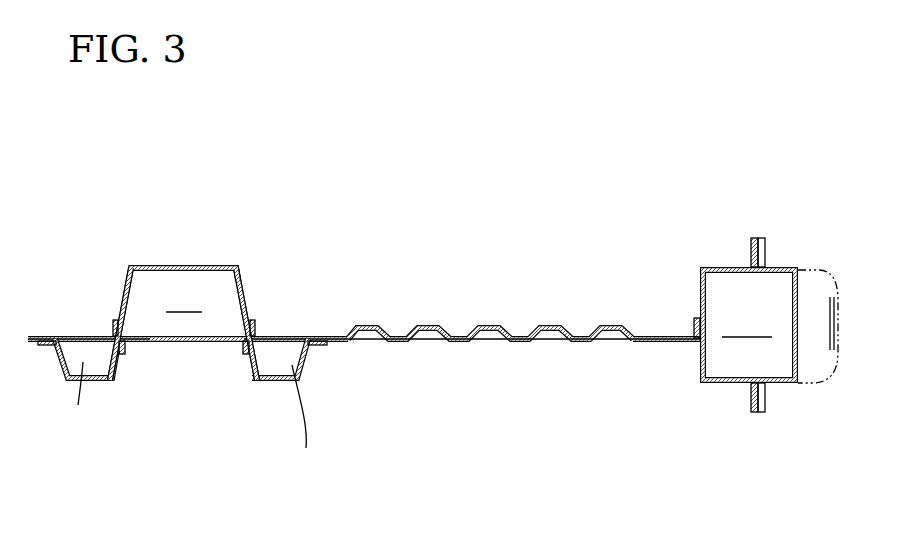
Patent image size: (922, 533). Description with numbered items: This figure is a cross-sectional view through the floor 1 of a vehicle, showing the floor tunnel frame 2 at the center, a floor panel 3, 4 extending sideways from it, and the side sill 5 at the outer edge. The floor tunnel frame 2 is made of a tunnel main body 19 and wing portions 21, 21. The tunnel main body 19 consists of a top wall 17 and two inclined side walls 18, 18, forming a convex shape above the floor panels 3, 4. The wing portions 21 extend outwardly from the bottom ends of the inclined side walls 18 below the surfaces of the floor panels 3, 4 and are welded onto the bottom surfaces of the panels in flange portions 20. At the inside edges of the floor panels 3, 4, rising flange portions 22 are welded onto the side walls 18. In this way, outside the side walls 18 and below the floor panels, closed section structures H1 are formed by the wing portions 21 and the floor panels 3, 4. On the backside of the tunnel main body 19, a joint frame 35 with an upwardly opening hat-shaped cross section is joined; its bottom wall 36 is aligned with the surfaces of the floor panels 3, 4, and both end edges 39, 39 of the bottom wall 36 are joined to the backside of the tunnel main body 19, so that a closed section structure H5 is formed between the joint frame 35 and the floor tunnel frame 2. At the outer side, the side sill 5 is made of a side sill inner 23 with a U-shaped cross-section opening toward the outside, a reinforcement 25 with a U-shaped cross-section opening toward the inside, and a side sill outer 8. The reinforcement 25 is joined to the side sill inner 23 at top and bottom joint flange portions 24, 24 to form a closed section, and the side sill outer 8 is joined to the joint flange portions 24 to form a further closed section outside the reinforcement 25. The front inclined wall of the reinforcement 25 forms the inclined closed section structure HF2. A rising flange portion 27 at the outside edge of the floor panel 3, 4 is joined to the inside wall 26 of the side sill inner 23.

The floor 1 is at (445, 280).
The floor tunnel frame 2 is at (222, 262).
The left floor panel 3 is at (546, 325).
The right floor panel 4 is at (58, 336).
The left side sill 5 is at (723, 267).
The side sill outer 8 is at (815, 268).
The top wall 17 is at (178, 265).
The inclined side wall 18 is at (125, 286).
The tunnel main body 19 is at (240, 270).
The flange portion 20 is at (50, 346).
The wing portion 21 is at (95, 382).
The flange portion 22 is at (115, 326).
The side sill inner 23 is at (700, 282).
The joint flange portion 24 is at (765, 250).
The reinforcement 25 is at (795, 338).
The inside wall 26 is at (700, 292).
The flange portion 27 is at (694, 324).
The joint frame 35 is at (212, 342).
The bottom wall 36 is at (176, 342).
The end edge 39 is at (126, 354).
The closed section structure H1 is at (192, 419).
The closed section structure H5 is at (184, 300).
The inclined closed section structure HF2 is at (747, 325).